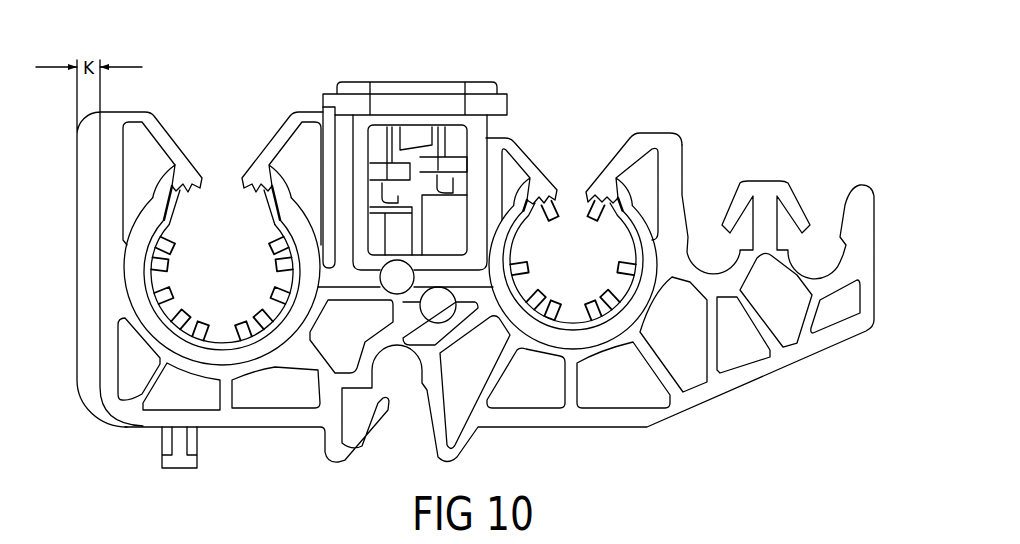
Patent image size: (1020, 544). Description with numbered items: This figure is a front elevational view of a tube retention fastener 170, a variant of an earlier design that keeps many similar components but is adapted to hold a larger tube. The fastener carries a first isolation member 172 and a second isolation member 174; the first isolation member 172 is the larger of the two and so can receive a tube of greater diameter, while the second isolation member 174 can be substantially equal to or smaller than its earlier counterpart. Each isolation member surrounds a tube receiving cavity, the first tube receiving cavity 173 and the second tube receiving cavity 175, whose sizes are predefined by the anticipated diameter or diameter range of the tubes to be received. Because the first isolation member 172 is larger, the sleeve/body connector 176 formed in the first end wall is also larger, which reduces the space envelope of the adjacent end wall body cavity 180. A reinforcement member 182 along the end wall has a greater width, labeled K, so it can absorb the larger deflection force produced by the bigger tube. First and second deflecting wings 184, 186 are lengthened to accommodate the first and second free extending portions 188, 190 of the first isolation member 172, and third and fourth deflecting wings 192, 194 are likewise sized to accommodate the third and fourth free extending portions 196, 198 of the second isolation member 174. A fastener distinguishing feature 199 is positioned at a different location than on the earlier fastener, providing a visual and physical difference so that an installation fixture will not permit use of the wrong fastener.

The tube retention fastener 170 is at (624, 82).
The first isolation member 172 is at (176, 317).
The first tube receiving cavity 173 is at (180, 270).
The second isolation member 174 is at (605, 312).
The second tube receiving cavity 175 is at (547, 330).
The sleeve/body connector 176 is at (118, 252).
The end wall body cavity 180 is at (122, 338).
The reinforcement member 182 is at (90, 142).
The first deflecting wing 184 is at (165, 141).
The second deflecting wing 186 is at (283, 140).
The first free extending portion 188 is at (157, 192).
The second free extending portion 190 is at (292, 202).
The third deflecting wing 192 is at (517, 155).
The fourth deflecting wing 194 is at (620, 163).
The third free extending portion 196 is at (505, 223).
The fourth free extending portion 198 is at (632, 210).
The fastener distinguishing feature 199 is at (172, 455).